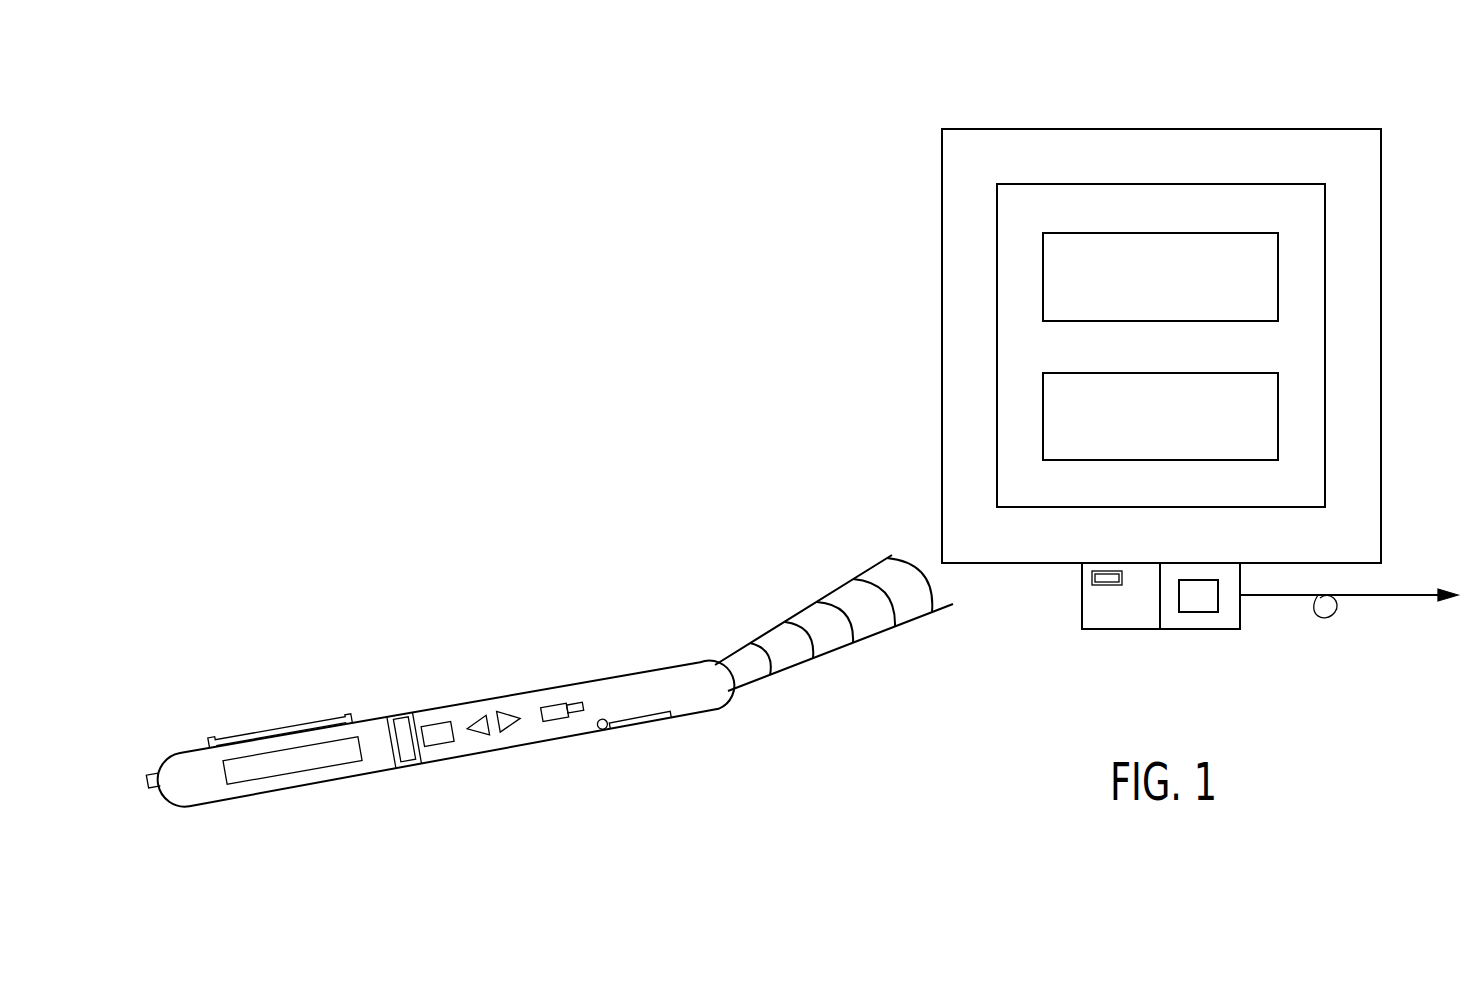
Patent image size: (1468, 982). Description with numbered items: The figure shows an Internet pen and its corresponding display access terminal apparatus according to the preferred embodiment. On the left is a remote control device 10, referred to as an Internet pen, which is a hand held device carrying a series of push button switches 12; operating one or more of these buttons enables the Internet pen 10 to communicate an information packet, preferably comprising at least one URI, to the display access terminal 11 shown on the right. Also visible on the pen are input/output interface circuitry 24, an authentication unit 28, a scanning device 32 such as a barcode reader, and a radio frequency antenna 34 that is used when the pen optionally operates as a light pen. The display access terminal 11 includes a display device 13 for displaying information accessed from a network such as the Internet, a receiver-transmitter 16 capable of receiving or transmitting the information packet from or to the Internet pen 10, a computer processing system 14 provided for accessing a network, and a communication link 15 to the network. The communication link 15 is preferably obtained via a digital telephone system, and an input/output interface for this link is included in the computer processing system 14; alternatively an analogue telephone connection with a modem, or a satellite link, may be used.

The remote control device 10 is at (461, 655).
The display access terminal 11 is at (1062, 128).
The push button switches 12 is at (490, 836).
The display device 13 is at (1298, 183).
The computer processing system 14 is at (1200, 630).
The communication link 15 is at (1345, 598).
The receiver-transmitter 16 is at (1112, 630).
The input/output interface circuitry 24 is at (601, 794).
The authentication unit 28 is at (268, 830).
The scanning device 32 is at (678, 778).
The radio frequency antenna 34 is at (305, 722).